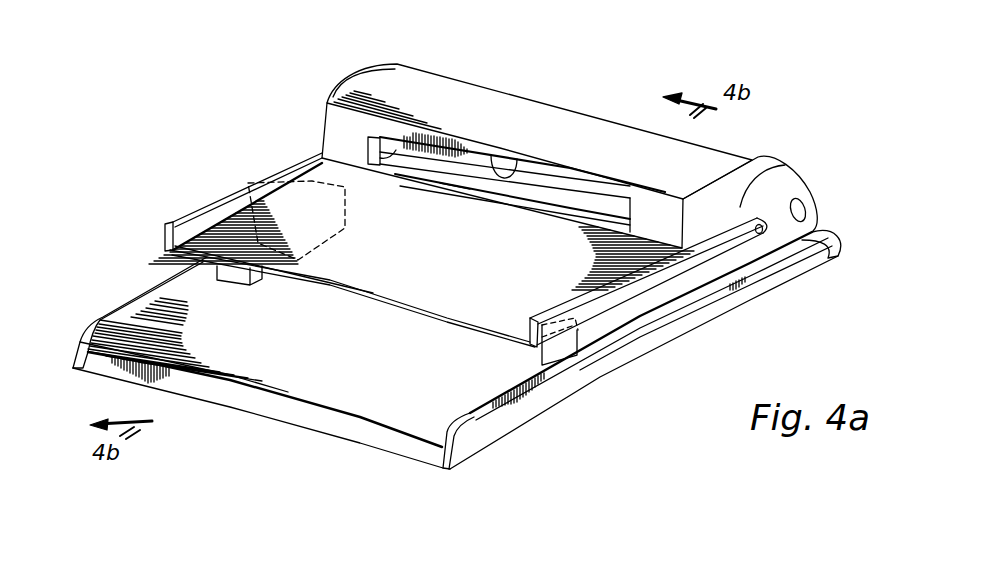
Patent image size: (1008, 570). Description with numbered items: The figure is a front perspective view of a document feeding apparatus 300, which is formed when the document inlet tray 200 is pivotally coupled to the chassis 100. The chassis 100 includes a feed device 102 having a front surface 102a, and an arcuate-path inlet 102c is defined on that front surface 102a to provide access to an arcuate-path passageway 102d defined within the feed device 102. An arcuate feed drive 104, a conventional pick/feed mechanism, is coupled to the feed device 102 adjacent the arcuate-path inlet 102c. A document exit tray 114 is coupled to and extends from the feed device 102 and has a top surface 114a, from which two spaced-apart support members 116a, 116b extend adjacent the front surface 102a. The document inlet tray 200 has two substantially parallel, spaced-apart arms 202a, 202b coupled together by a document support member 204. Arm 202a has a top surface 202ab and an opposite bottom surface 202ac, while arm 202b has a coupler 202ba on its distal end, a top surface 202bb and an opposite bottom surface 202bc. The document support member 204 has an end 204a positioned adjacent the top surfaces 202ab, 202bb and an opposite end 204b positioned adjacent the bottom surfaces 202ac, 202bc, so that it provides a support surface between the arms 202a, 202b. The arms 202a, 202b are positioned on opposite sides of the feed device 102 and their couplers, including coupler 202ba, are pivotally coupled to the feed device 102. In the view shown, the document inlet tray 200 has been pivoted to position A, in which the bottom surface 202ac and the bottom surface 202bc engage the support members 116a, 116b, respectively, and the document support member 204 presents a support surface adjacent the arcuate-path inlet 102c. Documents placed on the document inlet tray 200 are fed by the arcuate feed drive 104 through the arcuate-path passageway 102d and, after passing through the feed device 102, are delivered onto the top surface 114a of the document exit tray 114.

The chassis 100 is at (577, 95).
The feed device 102 is at (497, 93).
The front surface 102a is at (333, 130).
The arcuate-path inlet 102c is at (503, 158).
The arcuate-path passageway 102d is at (455, 179).
The arcuate feed drive 104 is at (393, 148).
The document inlet tray 200 is at (137, 211).
The arm 202a is at (188, 228).
The top surface 202ab is at (257, 182).
The bottom surface 202ac is at (168, 251).
The arm 202b is at (723, 290).
The coupler 202ba is at (777, 233).
The top surface 202bb is at (783, 173).
The bottom surface 202bc is at (690, 265).
The document support member 204 is at (510, 281).
The end 204a is at (540, 213).
The end 204b is at (380, 303).
The document exit tray 114 is at (283, 417).
The top surface 114a is at (438, 390).
The support member 116a is at (230, 281).
The support member 116b is at (590, 333).
The document feeding apparatus 300 is at (145, 112).
The position A is at (645, 385).